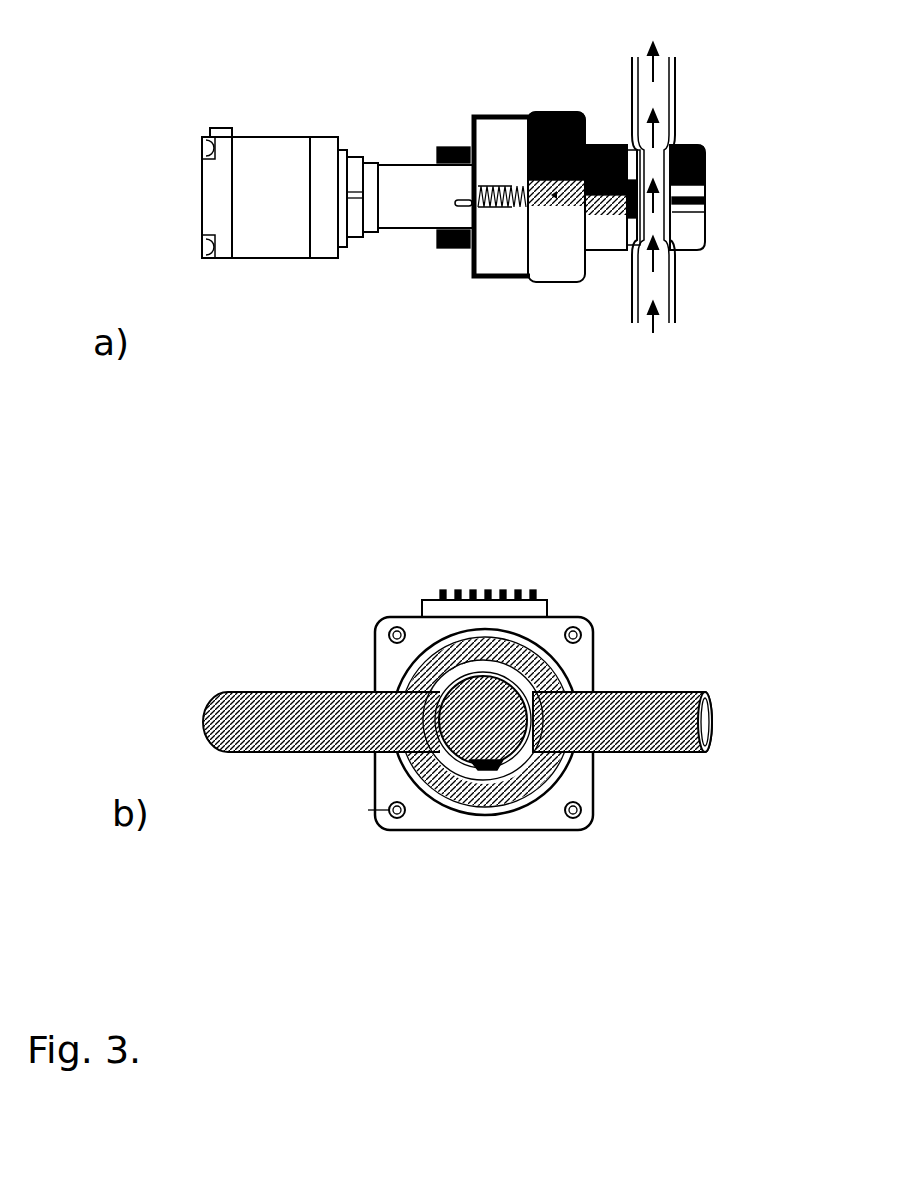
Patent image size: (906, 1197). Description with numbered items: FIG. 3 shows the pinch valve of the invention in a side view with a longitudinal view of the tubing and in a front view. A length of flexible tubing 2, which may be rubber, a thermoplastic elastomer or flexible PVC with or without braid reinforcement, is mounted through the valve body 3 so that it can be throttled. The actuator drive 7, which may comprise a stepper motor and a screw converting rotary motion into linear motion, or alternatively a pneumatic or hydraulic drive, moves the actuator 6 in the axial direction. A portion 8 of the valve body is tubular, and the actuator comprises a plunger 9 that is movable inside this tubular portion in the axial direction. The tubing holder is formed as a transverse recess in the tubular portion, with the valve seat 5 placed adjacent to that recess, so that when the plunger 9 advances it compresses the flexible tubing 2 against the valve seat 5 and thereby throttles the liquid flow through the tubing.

The flexible tubing 2 is at (673, 115).
The valve body 3 is at (555, 110).
The valve seat 5 is at (677, 172).
The actuator 6 is at (405, 192).
The actuator drive 7 is at (275, 157).
The tubular portion of the valve body 8 is at (612, 157).
The plunger 9 is at (635, 193).